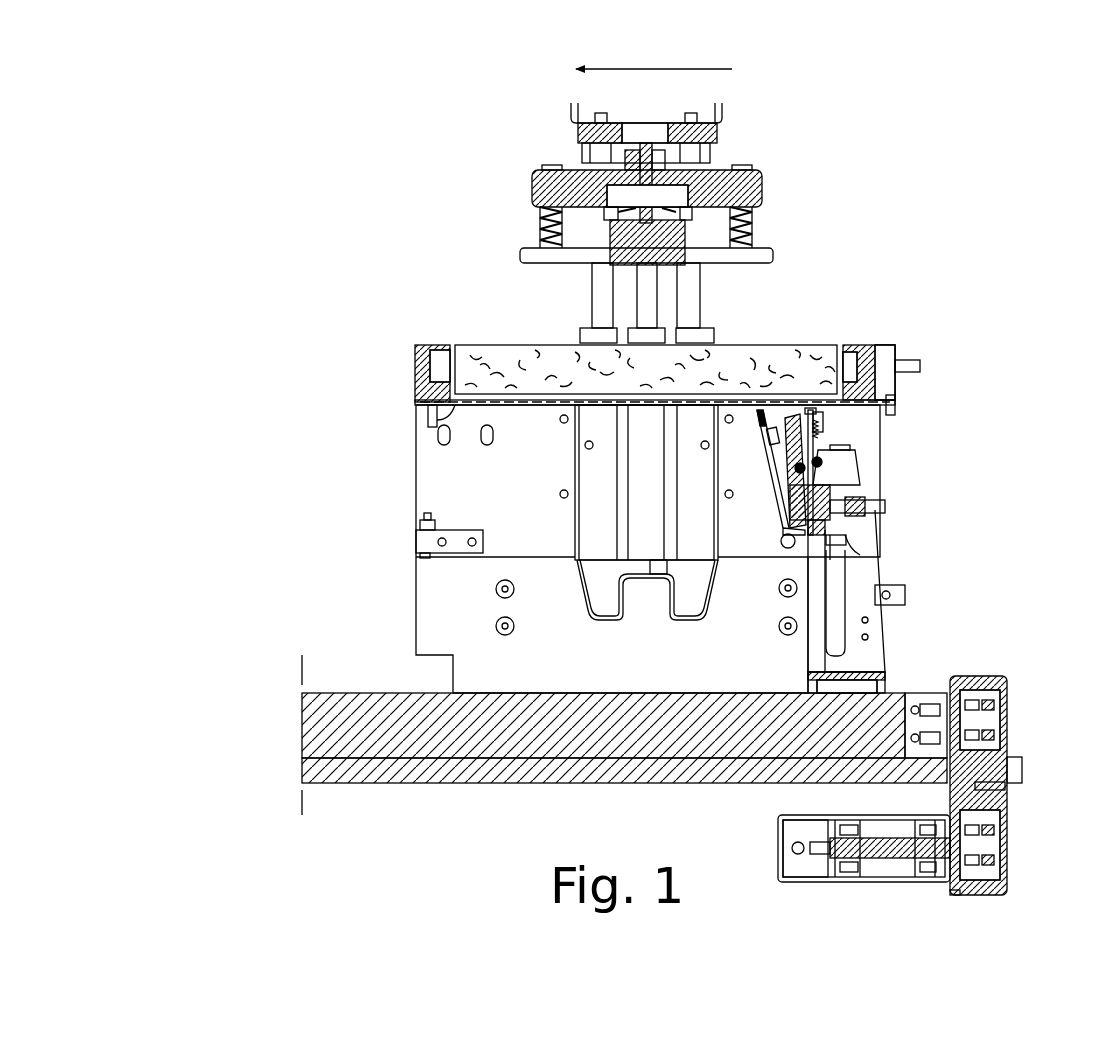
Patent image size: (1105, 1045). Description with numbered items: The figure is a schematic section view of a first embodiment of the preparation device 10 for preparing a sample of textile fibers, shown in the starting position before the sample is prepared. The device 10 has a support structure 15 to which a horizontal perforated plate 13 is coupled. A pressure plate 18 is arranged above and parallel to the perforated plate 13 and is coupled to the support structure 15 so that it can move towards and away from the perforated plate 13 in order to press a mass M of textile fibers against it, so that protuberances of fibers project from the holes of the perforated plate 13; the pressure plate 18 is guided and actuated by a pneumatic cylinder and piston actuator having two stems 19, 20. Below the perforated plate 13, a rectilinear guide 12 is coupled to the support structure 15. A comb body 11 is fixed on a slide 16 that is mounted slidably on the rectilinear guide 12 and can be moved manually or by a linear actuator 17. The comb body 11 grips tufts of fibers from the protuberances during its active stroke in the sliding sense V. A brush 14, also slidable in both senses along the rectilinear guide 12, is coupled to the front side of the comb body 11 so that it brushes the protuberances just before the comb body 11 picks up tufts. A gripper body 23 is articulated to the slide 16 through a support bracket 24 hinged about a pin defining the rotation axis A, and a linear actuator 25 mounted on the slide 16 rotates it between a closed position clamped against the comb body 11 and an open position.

The preparation device 10 is at (1000, 308).
The comb body 11 is at (826, 413).
The rectilinear guide 12 is at (312, 738).
The perforated plate 13 is at (437, 424).
The brush 14 is at (770, 408).
The support structure 15 is at (420, 500).
The slide 16 is at (876, 656).
The linear actuator 17 is at (1000, 690).
The pressure plate 18 is at (516, 252).
The stem 19 is at (594, 315).
The stem 20 is at (690, 300).
The gripper body 23 is at (816, 437).
The support bracket 24 is at (845, 498).
The linear actuator 25 is at (850, 550).
The rotation axis A is at (822, 468).
The mass of textile fibers M is at (808, 347).
The sliding sense V is at (660, 69).